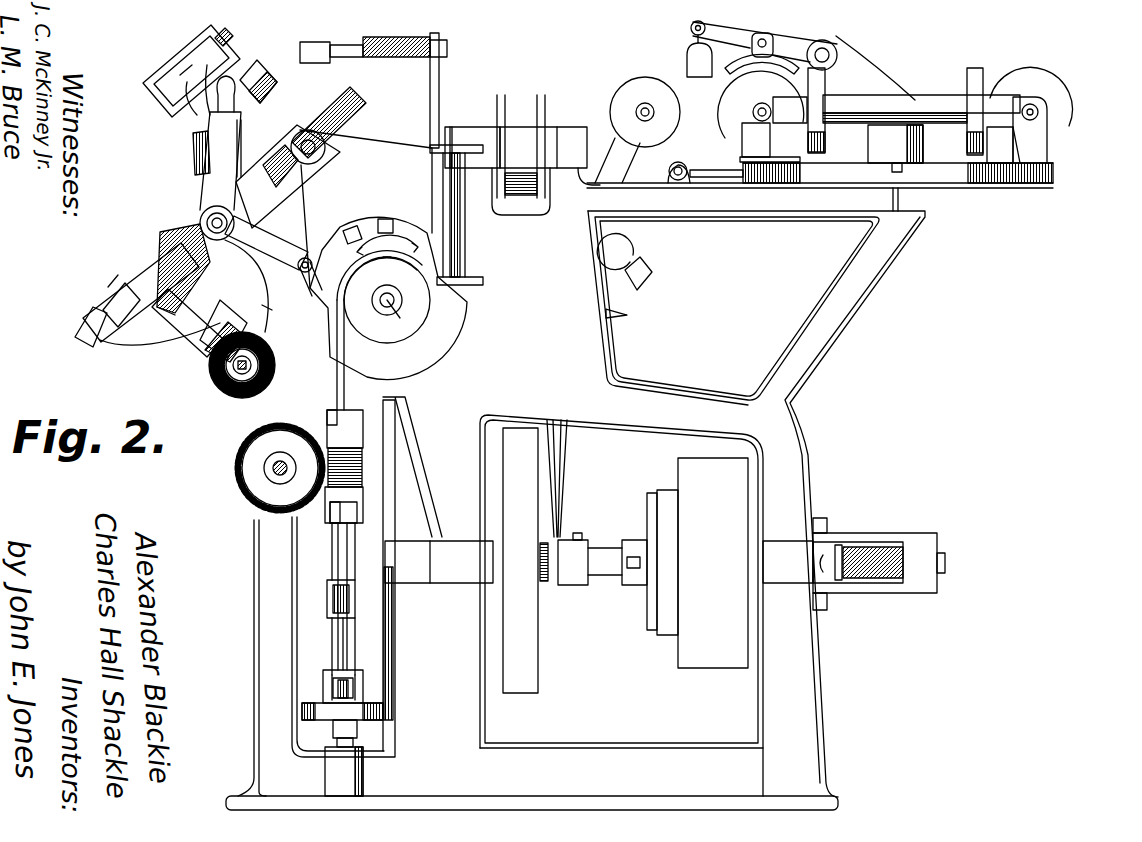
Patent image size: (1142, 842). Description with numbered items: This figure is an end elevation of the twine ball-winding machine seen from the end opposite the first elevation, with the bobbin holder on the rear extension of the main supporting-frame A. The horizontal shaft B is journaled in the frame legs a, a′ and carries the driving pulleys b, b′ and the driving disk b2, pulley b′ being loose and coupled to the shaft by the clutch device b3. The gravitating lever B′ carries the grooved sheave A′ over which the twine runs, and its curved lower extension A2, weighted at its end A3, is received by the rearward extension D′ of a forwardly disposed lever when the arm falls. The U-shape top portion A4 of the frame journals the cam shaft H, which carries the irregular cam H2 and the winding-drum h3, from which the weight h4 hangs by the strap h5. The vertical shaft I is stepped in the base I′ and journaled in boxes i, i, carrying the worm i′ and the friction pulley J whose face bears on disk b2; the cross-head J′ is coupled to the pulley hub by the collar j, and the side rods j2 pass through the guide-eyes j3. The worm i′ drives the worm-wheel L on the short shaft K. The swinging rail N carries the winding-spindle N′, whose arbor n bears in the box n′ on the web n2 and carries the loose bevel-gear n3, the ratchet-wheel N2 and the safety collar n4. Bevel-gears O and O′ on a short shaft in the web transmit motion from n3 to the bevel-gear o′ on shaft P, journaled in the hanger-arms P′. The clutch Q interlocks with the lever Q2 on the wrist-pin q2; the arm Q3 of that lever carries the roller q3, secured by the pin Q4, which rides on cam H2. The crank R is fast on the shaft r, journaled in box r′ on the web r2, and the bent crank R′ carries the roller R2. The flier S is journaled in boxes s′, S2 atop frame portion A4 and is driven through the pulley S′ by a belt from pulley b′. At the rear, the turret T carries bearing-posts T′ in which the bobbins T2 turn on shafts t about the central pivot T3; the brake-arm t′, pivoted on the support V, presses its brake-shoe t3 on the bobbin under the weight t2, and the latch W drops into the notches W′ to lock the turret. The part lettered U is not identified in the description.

The main supporting-frame A is at (598, 412).
The grooved pulley or sheave A′ is at (645, 112).
The lower extension or curved branch A2 is at (648, 250).
The weighted end A3 is at (640, 283).
The U-shape top portion of main frame A4 is at (366, 209).
The frame leg a is at (854, 569).
The frame leg a′ is at (439, 585).
The horizontal shaft B is at (603, 563).
The gravitating lever or arm B′ is at (617, 160).
The driving pulley b is at (713, 563).
The driving pulley b′ is at (535, 556).
The driving disk b2 is at (385, 617).
The clutch device b3 is at (644, 562).
The rearward extension or short arm D′ is at (612, 315).
The cam shaft H is at (390, 303).
The irregular cam H2 is at (458, 326).
The winding-drum h3 is at (406, 335).
The weight h4 is at (333, 600).
The strap or belt h5 is at (338, 355).
The vertical shaft I is at (333, 650).
The base of main frame I′ is at (344, 771).
The bearing boxes i is at (348, 466).
The worm i′ is at (352, 467).
The friction disk or pulley J is at (303, 712).
The horizontal cross-head J′ is at (335, 688).
The collar j is at (327, 675).
The vertical side bars or rods j2 is at (345, 640).
The guide-eyes or boxes j3 is at (333, 513).
The short horizontal shaft K is at (280, 468).
The worm-wheel L is at (240, 444).
The U-shape swinging rail or frame N is at (288, 176).
The ball winding-spindle N′ is at (400, 87).
The ratchet-wheel N2 is at (187, 233).
The spindle arbor n is at (123, 307).
The box n′ is at (97, 313).
The web or spider n2 is at (147, 347).
The bevel-gear n3 is at (180, 232).
The safety collar or stop n4 is at (113, 287).
The bevel-gear O is at (141, 292).
The bevel-gear O′ is at (247, 327).
The bevel-gear o′ is at (268, 367).
The short longitudinal shaft P is at (215, 383).
The hanger-arms P′ is at (263, 307).
The grip-socket or clutch Q is at (195, 153).
The clutch lever Q2 is at (236, 128).
The extension arm Q3 is at (284, 250).
The square-shanked pin or bolt Q4 is at (297, 279).
The wrist-pin q2 is at (217, 212).
The wearing roller or trundle q3 is at (310, 258).
The crank-arm or lever R is at (170, 108).
The bent-arm or crank R′ is at (248, 62).
The roller or trundle R2 is at (278, 88).
The short shaft r is at (232, 38).
The box r′ is at (182, 69).
The web or arm r2 is at (190, 128).
The flier S is at (428, 55).
The flier pulley S′ is at (546, 155).
The flier journal box S2 is at (481, 130).
The flier journal box s′ is at (567, 130).
The turret or turn-table T is at (1007, 165).
The upright bearing-posts T′ is at (1030, 142).
The bobbin or spool T2 is at (917, 103).
The central pivot of turret T3 is at (895, 144).
The bobbin shaft t is at (762, 112).
The brake-arm t′ is at (778, 46).
The weight t2 is at (687, 55).
The brake-shoe t3 is at (762, 74).
The arc U is at (275, 286).
The bearing-arm or support V is at (861, 94).
The catch-bar or latch W is at (713, 173).
The notches or sockets W′ is at (895, 173).